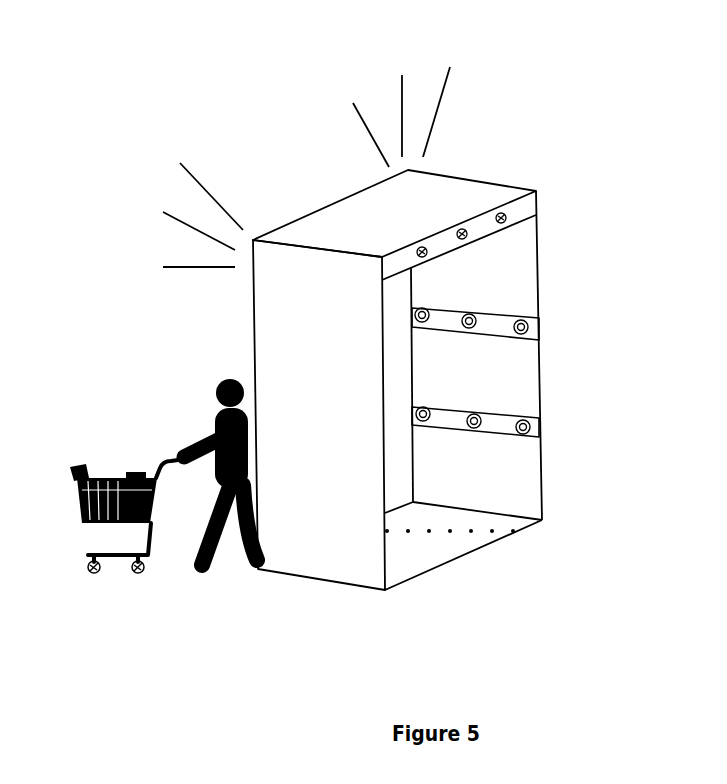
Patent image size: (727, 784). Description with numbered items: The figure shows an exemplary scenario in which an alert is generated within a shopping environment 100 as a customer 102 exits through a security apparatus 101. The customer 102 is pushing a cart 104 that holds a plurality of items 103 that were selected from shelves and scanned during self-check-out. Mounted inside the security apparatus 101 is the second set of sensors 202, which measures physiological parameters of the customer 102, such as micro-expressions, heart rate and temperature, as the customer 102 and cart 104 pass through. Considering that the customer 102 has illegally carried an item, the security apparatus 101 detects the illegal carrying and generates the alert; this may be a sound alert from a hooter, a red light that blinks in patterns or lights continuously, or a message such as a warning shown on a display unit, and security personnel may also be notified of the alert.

The shopping environment 100 is at (243, 80).
The security apparatus 101 is at (497, 183).
The second set of sensors 202 is at (523, 427).
The customer 102 is at (232, 380).
The plurality of items 103 is at (83, 467).
The cart 104 is at (91, 571).